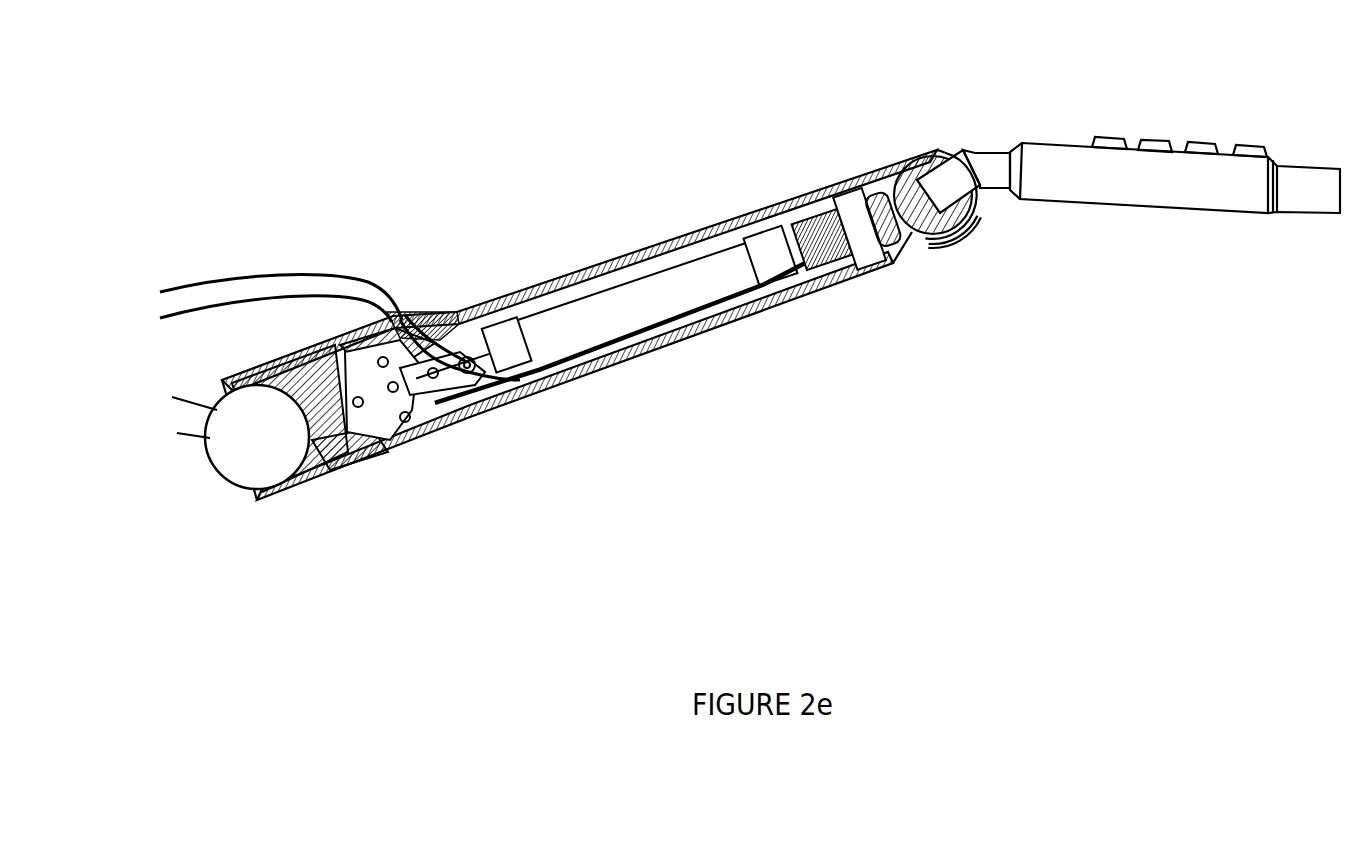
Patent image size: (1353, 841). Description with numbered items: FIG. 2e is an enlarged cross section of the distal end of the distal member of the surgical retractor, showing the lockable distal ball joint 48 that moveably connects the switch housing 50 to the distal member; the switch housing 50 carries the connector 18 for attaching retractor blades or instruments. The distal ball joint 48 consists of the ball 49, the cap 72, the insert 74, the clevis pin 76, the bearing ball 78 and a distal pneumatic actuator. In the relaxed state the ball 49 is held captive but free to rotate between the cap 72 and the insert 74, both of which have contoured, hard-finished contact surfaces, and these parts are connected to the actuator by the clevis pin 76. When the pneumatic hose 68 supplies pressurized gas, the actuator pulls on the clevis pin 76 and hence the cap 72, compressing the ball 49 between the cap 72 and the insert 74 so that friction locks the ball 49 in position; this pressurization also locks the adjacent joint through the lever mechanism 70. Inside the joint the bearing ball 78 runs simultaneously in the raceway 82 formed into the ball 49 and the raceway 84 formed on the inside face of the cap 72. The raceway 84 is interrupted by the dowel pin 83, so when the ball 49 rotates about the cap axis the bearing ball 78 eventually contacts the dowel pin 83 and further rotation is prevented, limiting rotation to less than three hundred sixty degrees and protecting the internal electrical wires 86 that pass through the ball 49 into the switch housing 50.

The connector 18 is at (1302, 285).
The distal ball joint 48 is at (1023, 245).
The ball 49 is at (1002, 236).
The switch housing 50 is at (1139, 243).
The pneumatic hose 68 is at (350, 302).
The lever mechanism 70 is at (376, 486).
The cap 72 is at (919, 286).
The insert 74 is at (579, 325).
The clevis pin 76 is at (793, 202).
The bearing ball 78 is at (853, 155).
The raceway 84 is at (902, 247).
The raceway 82 is at (930, 139).
The dowel pin 83 is at (1010, 247).
The internal electrical wires 86 is at (613, 355).